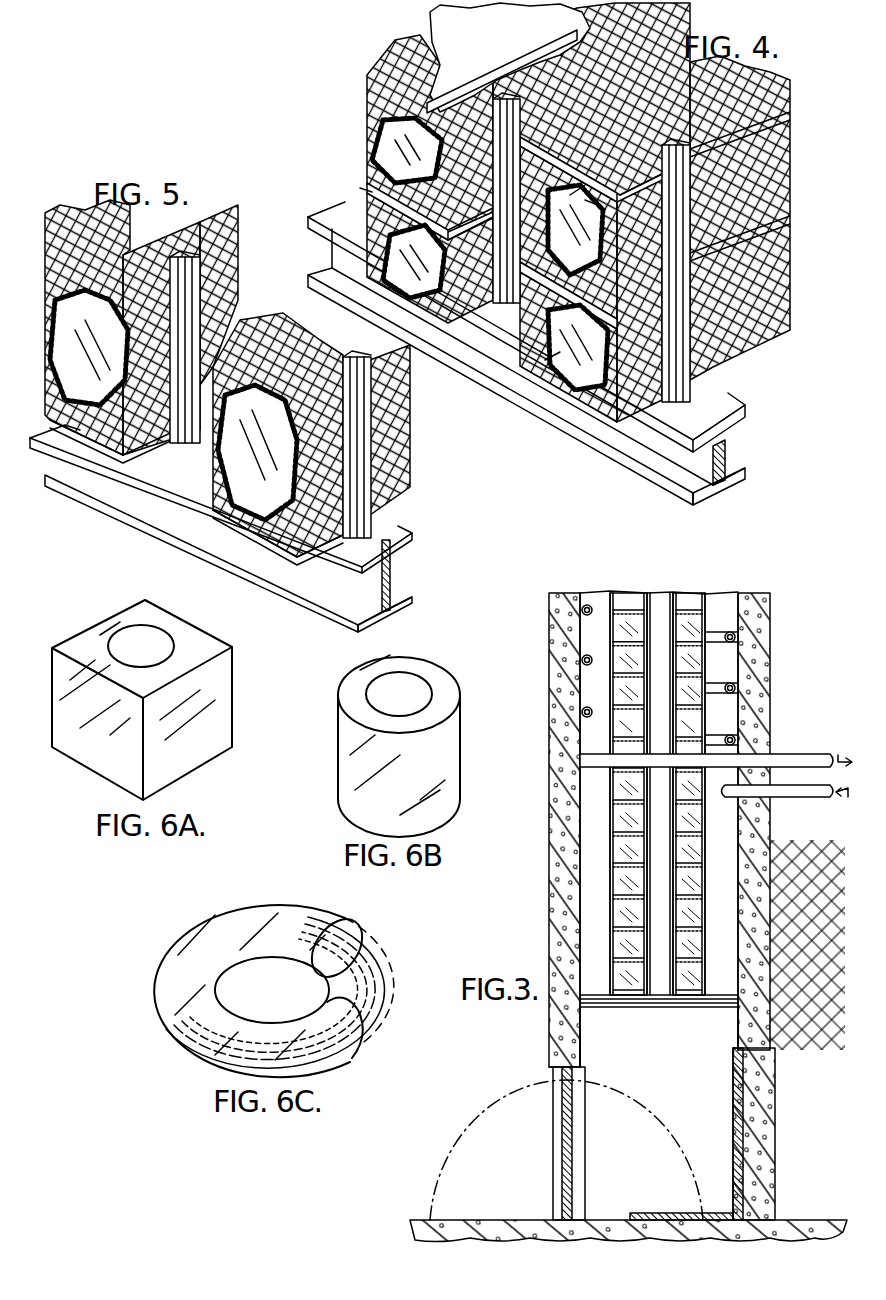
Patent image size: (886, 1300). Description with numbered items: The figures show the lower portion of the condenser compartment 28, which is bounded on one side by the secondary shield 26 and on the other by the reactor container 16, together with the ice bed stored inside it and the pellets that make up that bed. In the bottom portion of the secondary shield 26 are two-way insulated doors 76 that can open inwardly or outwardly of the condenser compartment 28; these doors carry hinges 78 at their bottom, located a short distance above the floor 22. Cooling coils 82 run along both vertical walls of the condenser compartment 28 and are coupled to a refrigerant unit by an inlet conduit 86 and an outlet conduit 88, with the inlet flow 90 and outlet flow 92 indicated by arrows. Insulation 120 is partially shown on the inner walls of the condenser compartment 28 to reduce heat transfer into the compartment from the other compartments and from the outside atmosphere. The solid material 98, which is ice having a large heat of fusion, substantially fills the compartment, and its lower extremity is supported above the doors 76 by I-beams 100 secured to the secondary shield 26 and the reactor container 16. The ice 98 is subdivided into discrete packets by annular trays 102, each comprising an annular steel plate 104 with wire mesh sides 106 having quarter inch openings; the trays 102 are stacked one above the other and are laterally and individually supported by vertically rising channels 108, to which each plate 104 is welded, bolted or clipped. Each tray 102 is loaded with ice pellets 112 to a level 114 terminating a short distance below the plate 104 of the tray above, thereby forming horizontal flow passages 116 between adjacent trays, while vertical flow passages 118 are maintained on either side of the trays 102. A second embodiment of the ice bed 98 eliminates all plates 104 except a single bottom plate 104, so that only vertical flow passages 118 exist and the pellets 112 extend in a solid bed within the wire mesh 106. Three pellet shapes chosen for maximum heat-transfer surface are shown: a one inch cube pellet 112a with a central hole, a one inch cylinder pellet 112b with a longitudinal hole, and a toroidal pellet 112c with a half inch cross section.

In FIG. 3, the reactor container 16 is at (757, 593).
In FIG. 3, the floor 22 is at (425, 1222).
In FIG. 3, the secondary shield 26 is at (566, 596).
In FIG. 3, the condenser compartment 28 is at (605, 1052).
In FIG. 3, the insulated doors 76 is at (562, 1132).
In FIG. 3, the hinges 78 is at (562, 1200).
In FIG. 3, the cooling coils 82 is at (585, 712).
In FIG. 3, the inlet conduit 86 is at (805, 793).
In FIG. 3, the outlet conduit 88 is at (793, 753).
In FIG. 3, the inlet flow 90 is at (839, 805).
In FIG. 3, the outlet flow 92 is at (841, 747).
In FIG. 4, the solid material 98 is at (367, 133).
In FIG. 5, the solid material 98 is at (270, 317).
In FIG. 3, the solid material 98 is at (628, 594).
In FIG. 4, the I-beams 100 is at (747, 418).
In FIG. 5, the I-beams 100 is at (397, 573).
In FIG. 3, the I-beams 100 is at (688, 1008).
In FIG. 4, the annular trays 102 is at (827, 200).
In FIG. 3, the annular trays 102 is at (643, 983).
In FIG. 4, the annular steel plate 104 is at (773, 118).
In FIG. 5, the annular steel plate 104 is at (253, 520).
In FIG. 4, the wire mesh sides 106 is at (780, 175).
In FIG. 5, the wire mesh sides 106 is at (410, 480).
In FIG. 4, the vertical channels 108 is at (693, 383).
In FIG. 5, the vertical channels 108 is at (167, 445).
In FIG. 3, the vertical channels 108 is at (713, 973).
In FIG. 4, the ice pellets 112 is at (568, 256).
In FIG. 5, the ice pellets 112 is at (173, 405).
In FIG. 6A, the ice pellet 112a is at (192, 760).
In FIG. 6B, the ice pellet 112b is at (447, 763).
In FIG. 6C, the ice pellet 112c is at (347, 925).
In FIG. 4, the level 114 is at (573, 190).
In FIG. 3, the level 114 is at (615, 840).
In FIG. 4, the horizontal flow passages 116 is at (362, 190).
In FIG. 3, the horizontal flow passages 116 is at (613, 868).
In FIG. 3, the vertical flow passages 118 is at (598, 594).
In FIG. 3, the insulation 120 is at (733, 1092).